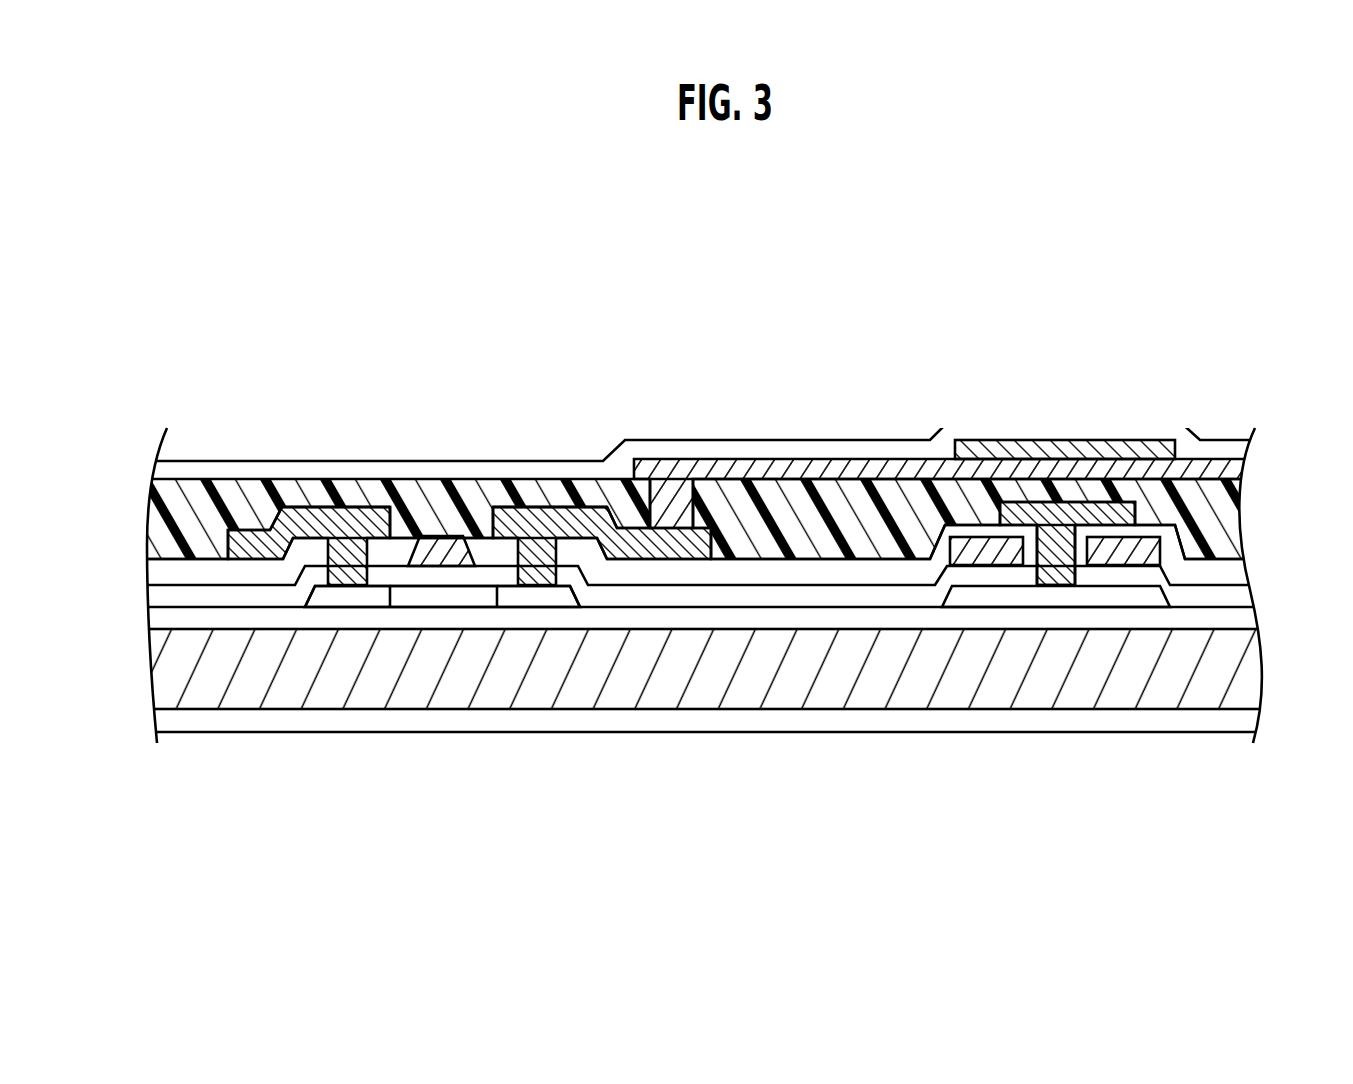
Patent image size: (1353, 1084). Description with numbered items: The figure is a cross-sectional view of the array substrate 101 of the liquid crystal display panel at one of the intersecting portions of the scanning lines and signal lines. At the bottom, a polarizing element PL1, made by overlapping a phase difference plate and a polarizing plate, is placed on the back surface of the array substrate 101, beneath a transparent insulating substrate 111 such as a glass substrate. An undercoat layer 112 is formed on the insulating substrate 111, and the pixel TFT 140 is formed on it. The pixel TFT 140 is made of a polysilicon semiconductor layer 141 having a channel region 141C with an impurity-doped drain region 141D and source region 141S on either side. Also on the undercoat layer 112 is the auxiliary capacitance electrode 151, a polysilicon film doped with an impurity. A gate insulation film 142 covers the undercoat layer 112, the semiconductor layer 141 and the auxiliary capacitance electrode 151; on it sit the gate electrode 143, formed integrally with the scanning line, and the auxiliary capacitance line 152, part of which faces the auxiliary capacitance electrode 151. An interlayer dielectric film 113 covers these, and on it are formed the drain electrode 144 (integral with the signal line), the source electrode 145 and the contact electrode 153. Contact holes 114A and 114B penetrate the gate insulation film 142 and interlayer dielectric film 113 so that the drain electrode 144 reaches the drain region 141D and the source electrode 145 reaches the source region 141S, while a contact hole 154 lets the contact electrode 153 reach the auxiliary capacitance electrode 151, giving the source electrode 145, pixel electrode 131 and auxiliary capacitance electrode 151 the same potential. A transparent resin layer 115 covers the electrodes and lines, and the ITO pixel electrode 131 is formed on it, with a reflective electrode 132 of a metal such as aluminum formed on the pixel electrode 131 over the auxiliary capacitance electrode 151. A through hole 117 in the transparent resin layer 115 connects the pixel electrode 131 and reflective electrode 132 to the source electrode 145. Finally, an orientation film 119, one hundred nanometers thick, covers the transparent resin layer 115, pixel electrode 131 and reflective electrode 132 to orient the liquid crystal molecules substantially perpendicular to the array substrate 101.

The array substrate 101 is at (1250, 287).
The insulating substrate 111 is at (1236, 678).
The undercoat layer 112 is at (1236, 618).
The interlayer dielectric film 113 is at (1236, 566).
The contact hole 114A is at (337, 553).
The contact hole 114B is at (537, 557).
The transparent resin layer 115 is at (152, 525).
The through hole 117 is at (660, 512).
The orientation film 119 is at (1236, 450).
The pixel electrode 131 is at (1238, 480).
The reflective electrode 132 is at (1158, 450).
The pixel TFT 140 is at (468, 630).
The semiconductor layer 141 is at (445, 610).
The channel region 141C is at (415, 600).
The drain region 141D is at (343, 600).
The source region 141S is at (535, 600).
The gate insulation film 142 is at (1236, 597).
The gate electrode 143 is at (443, 545).
The drain electrode 144 is at (305, 518).
The source electrode 145 is at (518, 522).
The auxiliary capacitance electrode 151 is at (1058, 598).
The auxiliary capacitance line 152 is at (980, 558).
The contact electrode 153 is at (1100, 510).
The contact hole 154 is at (1046, 528).
The polarizing element PL1 is at (1236, 722).